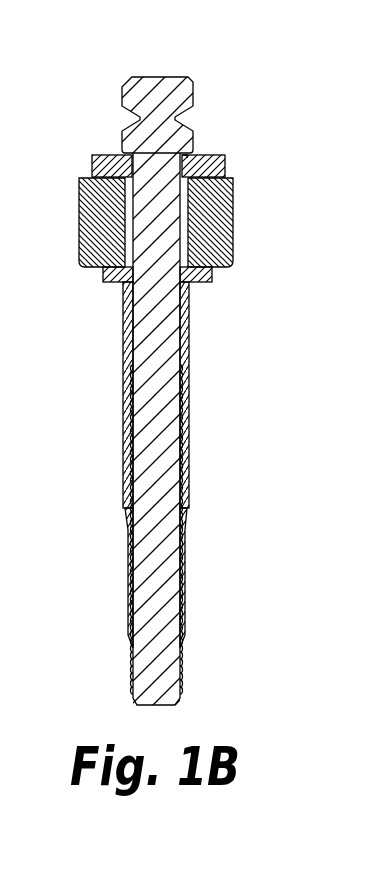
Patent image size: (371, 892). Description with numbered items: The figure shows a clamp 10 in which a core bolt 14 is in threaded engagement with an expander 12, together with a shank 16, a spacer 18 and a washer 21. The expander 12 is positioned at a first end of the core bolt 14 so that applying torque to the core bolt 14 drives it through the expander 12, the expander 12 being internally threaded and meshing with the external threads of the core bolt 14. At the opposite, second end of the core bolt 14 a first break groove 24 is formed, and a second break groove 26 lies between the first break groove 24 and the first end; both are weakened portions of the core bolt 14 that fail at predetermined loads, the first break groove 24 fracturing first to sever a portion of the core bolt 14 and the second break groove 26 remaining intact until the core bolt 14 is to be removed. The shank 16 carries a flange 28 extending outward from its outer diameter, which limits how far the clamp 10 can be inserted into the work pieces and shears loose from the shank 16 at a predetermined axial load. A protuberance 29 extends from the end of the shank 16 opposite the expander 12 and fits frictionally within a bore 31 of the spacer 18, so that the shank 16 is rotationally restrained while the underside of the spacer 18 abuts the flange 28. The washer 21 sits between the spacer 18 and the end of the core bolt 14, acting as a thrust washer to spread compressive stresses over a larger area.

The clamp 10 is at (209, 377).
The expander 12 is at (190, 572).
The core bolt 14 is at (165, 425).
The shank 16 is at (187, 373).
The spacer 18 is at (213, 215).
The washer 21 is at (223, 165).
The first break groove 24 is at (177, 115).
The second break groove 26 is at (187, 155).
The flange 28 is at (212, 288).
The protuberance 29 is at (213, 258).
The bore 31 is at (158, 202).